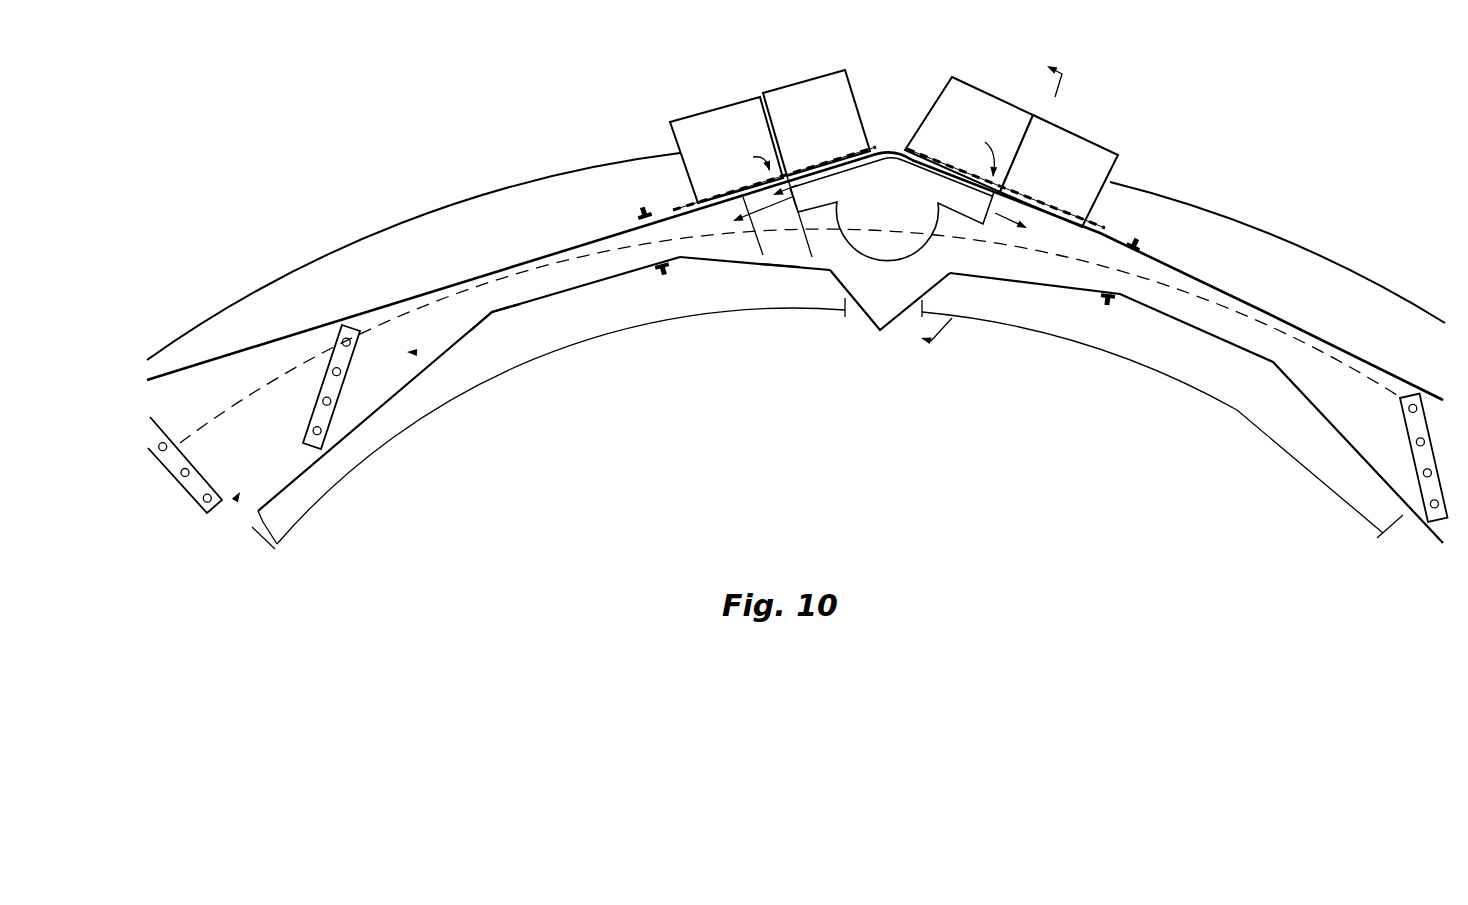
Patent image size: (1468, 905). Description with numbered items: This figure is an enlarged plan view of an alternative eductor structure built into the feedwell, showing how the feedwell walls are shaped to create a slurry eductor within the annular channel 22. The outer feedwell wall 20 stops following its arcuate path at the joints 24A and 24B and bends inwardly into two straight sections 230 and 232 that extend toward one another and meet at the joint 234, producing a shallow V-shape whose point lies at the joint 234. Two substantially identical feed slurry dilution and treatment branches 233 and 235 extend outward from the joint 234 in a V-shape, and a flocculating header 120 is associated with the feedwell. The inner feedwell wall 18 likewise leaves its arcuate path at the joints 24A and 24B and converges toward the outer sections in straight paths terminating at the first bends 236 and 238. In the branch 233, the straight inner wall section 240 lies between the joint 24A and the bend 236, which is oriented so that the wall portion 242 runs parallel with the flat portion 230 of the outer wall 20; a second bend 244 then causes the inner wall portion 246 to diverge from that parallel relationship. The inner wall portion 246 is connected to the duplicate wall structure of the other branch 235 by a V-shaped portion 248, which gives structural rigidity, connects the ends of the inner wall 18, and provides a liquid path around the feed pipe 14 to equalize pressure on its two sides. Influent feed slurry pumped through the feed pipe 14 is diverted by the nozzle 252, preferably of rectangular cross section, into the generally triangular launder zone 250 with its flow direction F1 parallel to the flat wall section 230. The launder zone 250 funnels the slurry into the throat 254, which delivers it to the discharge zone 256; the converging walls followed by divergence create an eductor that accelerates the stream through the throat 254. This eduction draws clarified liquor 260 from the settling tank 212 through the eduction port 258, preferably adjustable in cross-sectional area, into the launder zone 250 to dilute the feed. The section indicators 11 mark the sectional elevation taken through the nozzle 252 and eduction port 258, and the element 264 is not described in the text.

The settling tank 212 is at (796, 237).
The outer feedwell wall 20 is at (1190, 280).
The eduction port 258 is at (760, 95).
The clarified liquor 260 is at (793, 107).
The opposing drive block 264 is at (1009, 198).
The straight section of outer feedwell wall 230 is at (482, 272).
The joint 234 is at (887, 150).
The straight section of outer feedwell wall 232 is at (1267, 313).
The nozzle 252 is at (818, 199).
The feed pipe 14 is at (899, 165).
The launder zone 250 is at (744, 252).
The flow direction F1 is at (744, 215).
The straight inner wall section 240 is at (343, 443).
The first bend 236 is at (495, 313).
The wall portion of inner wall 242 is at (560, 288).
The second bend 244 is at (680, 257).
The inner wall portion 246 is at (783, 267).
The V-shaped portion 248 is at (880, 332).
The first bend 238 is at (1270, 362).
The throat 254 is at (628, 262).
The feed slurry dilution and treatment branch 233 is at (468, 392).
The feed slurry dilution and treatment branch 235 is at (1157, 367).
The section line 11- 11 is at (953, 198).
The inner feedwell wall 18 is at (263, 530).
The annular channel 22 is at (236, 498).
The discharge zone 256 is at (412, 352).
The flocculating header 120 is at (327, 357).
The joint 24A is at (173, 433).
The joint 24B is at (1403, 427).